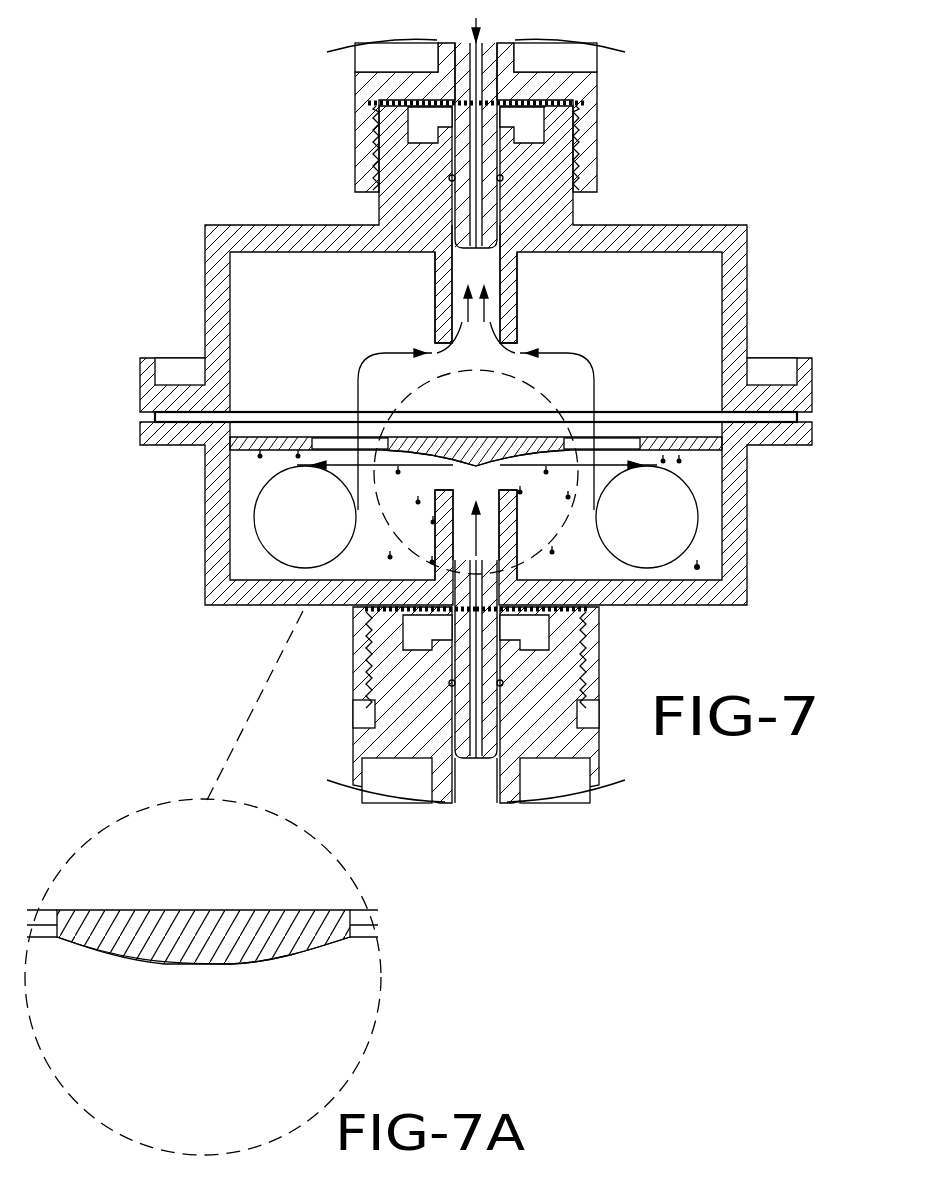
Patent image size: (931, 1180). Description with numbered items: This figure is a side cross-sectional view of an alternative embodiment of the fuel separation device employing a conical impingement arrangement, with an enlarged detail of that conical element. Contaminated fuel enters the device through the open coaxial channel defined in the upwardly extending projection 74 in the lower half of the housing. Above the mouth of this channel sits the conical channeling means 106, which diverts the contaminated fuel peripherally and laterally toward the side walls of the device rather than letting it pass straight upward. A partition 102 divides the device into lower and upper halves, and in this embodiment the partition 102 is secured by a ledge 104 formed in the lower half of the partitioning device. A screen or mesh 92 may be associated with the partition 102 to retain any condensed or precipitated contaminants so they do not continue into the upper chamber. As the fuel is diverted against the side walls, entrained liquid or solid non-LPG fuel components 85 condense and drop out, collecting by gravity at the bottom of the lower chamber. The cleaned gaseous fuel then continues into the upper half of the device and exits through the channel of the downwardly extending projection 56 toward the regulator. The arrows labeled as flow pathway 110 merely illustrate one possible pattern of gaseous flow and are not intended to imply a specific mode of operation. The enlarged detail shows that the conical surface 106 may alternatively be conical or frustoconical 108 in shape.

In FIG. 7, the downwardly extending projection 56 is at (520, 302).
In FIG. 7, the upwardly extending projection 74 is at (431, 548).
In FIG. 7, the liquid or solid non-LPG fuel components 85 is at (700, 565).
In FIG. 7, the screen or mesh 92 is at (608, 445).
In FIG. 7, the partition 102 is at (265, 440).
In FIG. 7, the ledge 104 is at (232, 468).
In FIG. 7, the conical channeling means 106 is at (514, 470).
In FIG. 7A, the frustoconical surface 108 is at (270, 955).
In FIG. 7, the air flow pathway 110 is at (364, 370).